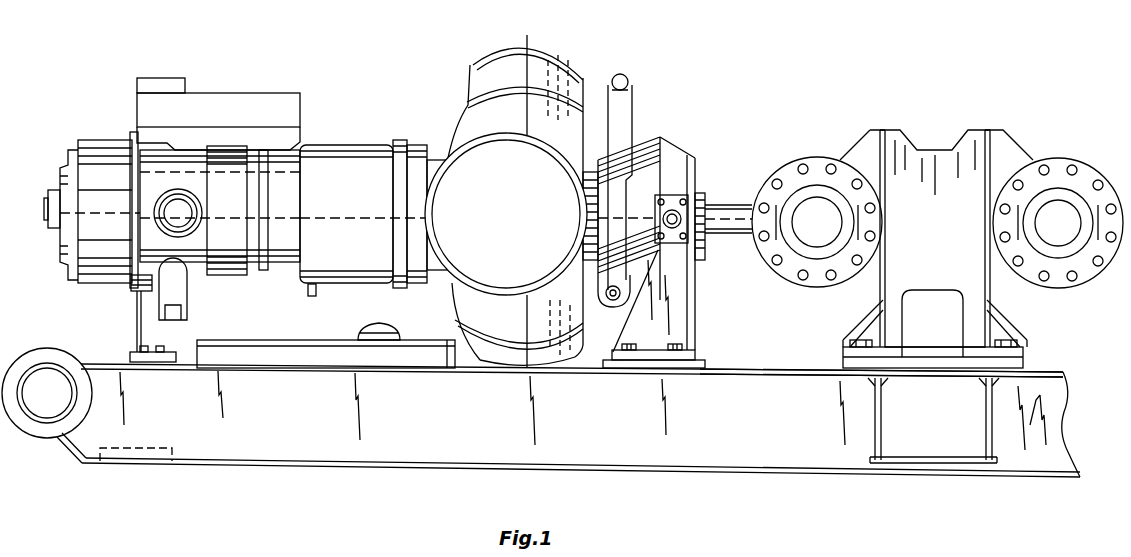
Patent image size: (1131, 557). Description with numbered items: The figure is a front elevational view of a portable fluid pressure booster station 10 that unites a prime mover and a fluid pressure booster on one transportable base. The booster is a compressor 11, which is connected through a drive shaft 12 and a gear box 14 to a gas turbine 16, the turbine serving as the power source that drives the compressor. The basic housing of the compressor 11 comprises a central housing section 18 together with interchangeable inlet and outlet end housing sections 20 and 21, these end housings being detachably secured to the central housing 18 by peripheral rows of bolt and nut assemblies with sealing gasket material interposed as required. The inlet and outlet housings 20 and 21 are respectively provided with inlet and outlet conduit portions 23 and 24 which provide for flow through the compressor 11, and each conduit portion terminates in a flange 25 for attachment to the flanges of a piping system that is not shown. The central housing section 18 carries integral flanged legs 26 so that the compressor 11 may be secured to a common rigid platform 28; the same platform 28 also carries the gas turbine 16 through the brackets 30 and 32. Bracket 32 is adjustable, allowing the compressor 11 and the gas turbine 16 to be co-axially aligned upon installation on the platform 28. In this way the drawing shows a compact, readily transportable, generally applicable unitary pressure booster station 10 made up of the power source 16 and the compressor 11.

The fluid pressure booster station 10 is at (395, 478).
The compressor 11 is at (940, 231).
The drive shaft 12 is at (728, 212).
The gear box 14 is at (672, 135).
The gas turbine 16 is at (370, 137).
The central housing section 18 is at (942, 226).
The inlet end housing section 20 is at (862, 148).
The outlet end housing section 21 is at (1007, 150).
The inlet conduit portion 23 is at (810, 250).
The outlet conduit portion 24 is at (1052, 250).
The flange 25 is at (781, 164).
The integral flanged legs 26 is at (967, 332).
The common rigid platform 28 is at (755, 372).
The bracket 30 is at (692, 332).
The bracket 32 is at (137, 320).